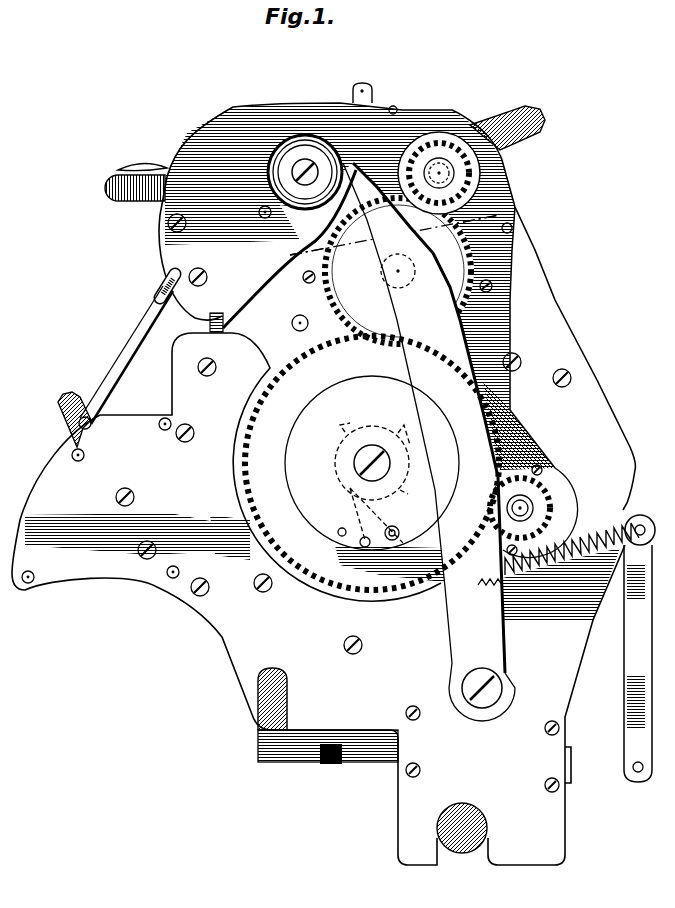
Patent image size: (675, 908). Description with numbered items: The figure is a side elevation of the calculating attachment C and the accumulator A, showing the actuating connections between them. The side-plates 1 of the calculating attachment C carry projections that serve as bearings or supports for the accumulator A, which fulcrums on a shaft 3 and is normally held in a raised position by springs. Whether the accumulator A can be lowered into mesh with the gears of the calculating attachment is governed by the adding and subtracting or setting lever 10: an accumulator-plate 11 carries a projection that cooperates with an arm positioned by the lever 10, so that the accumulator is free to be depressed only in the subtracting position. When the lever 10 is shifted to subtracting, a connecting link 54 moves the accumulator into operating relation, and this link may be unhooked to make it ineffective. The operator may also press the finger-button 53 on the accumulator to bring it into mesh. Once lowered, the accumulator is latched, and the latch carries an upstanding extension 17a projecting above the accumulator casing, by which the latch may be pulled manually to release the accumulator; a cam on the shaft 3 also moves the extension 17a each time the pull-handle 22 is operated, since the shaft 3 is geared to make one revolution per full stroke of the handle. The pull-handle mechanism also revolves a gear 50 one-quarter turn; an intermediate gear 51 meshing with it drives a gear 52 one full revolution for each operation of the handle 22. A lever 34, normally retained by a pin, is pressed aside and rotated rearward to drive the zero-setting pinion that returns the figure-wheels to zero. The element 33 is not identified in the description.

The side-plates 1 is at (240, 617).
The accumulator A is at (219, 128).
The calculating attachment C is at (176, 641).
The shaft 3 is at (445, 174).
The setting lever 10 is at (63, 397).
The accumulator-plate 11 is at (158, 274).
The upstanding extension 17a is at (368, 75).
The pull-handle 22 is at (305, 143).
The stop lug 33 is at (537, 126).
The lever 34 is at (105, 187).
The gear 50 is at (243, 468).
The intermediate gear 51 is at (452, 248).
The gear 52 is at (492, 200).
The finger-button 53 is at (150, 168).
The connecting link 54 is at (140, 330).